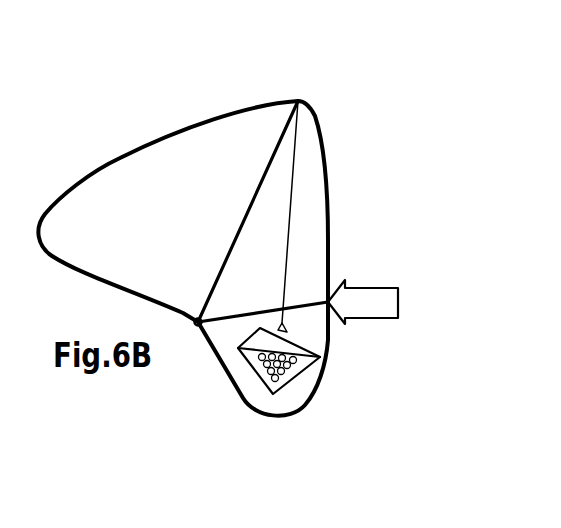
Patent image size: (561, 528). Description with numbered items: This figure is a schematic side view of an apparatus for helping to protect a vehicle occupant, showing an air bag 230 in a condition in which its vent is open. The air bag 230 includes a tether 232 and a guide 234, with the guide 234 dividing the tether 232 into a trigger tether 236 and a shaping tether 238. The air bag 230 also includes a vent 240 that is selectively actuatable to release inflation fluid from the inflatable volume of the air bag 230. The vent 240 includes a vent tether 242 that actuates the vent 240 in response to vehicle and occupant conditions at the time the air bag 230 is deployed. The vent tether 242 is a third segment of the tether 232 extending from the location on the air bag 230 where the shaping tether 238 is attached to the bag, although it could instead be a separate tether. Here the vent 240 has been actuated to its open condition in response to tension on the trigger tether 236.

The air bag 230 is at (163, 138).
The tether 232 is at (225, 241).
The guide 234 is at (196, 318).
The trigger tether 236 is at (240, 313).
The shaping tether 238 is at (253, 198).
The vent 240 is at (218, 358).
The vent tether 242 is at (288, 225).